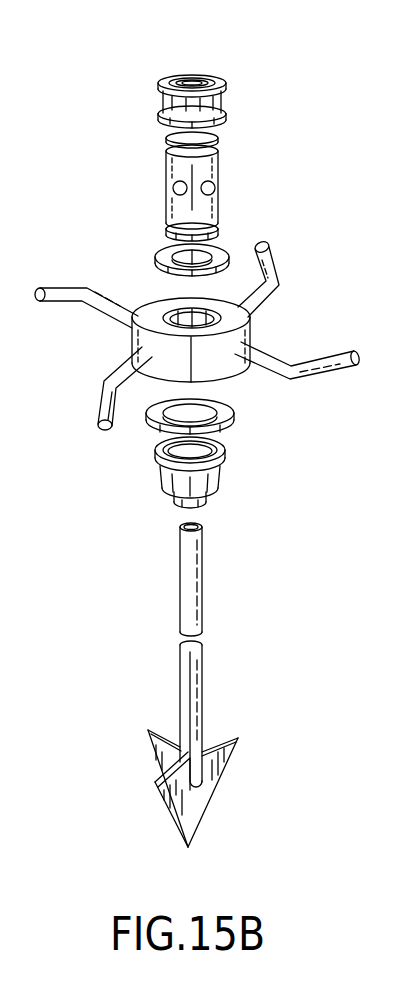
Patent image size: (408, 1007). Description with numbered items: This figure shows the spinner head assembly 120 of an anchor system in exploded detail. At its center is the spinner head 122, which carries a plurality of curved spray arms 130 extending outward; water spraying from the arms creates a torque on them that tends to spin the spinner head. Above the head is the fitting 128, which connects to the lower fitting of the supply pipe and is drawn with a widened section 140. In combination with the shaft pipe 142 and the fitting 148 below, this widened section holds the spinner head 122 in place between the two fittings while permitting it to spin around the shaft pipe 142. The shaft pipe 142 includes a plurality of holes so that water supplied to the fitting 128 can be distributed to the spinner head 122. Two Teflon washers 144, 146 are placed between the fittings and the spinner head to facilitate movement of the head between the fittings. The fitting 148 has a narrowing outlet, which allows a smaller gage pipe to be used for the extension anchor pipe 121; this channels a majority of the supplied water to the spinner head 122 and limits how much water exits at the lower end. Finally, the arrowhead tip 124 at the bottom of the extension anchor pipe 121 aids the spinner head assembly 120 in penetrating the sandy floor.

The spinner head assembly 120 is at (259, 158).
The extension anchor pipe 121 is at (190, 702).
The spinner head 122 is at (268, 312).
The arrowhead tip 124 is at (212, 797).
The fitting 128 is at (203, 82).
The spray arms 130 is at (268, 256).
The widened section 140 is at (222, 100).
The shaft pipe 142 is at (168, 172).
The washer 144 is at (220, 250).
The washer 146 is at (230, 423).
The fitting 148 is at (215, 490).